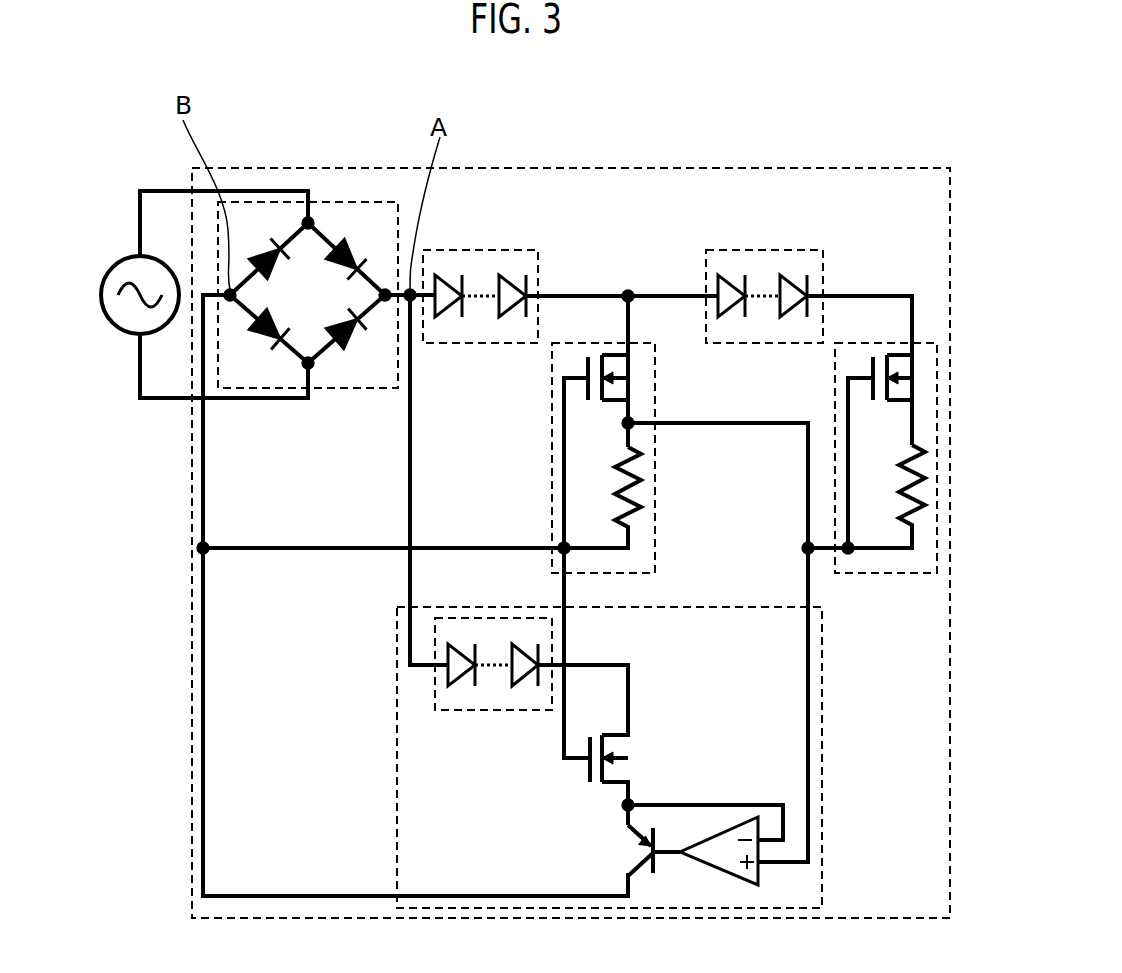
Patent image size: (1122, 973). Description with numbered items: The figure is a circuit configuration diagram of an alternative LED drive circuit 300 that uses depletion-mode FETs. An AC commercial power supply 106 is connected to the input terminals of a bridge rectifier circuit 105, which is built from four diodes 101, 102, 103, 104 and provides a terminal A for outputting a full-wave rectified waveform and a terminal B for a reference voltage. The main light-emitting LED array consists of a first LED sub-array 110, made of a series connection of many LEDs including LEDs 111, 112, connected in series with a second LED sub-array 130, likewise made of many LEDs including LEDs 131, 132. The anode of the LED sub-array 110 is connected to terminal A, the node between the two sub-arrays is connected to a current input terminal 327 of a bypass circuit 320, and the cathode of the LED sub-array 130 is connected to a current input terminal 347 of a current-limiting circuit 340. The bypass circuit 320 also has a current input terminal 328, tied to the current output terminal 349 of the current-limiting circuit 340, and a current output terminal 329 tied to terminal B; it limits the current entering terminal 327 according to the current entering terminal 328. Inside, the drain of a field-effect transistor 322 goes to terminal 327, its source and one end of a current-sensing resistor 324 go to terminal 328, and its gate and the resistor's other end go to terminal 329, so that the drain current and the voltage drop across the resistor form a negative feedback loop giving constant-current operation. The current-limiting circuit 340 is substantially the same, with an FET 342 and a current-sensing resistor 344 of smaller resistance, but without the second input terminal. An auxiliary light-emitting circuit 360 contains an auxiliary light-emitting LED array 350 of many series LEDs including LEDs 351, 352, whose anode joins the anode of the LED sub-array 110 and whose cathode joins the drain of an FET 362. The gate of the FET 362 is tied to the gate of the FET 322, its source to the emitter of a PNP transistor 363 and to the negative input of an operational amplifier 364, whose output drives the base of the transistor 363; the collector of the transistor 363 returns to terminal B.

The diode 101 is at (260, 252).
The diode 102 is at (348, 252).
The diode 103 is at (265, 345).
The diode 104 is at (355, 345).
The bridge rectifier circuit 105 is at (316, 272).
The AC commercial power supply 106 is at (133, 258).
The LED sub-array 110 is at (507, 204).
The LED 111 is at (442, 280).
The LED 112 is at (503, 280).
The LED sub-array 130 is at (792, 205).
The LED 131 is at (727, 280).
The LED 132 is at (787, 280).
The LED drive circuit 300 is at (925, 168).
The bypass circuit 320 is at (631, 602).
The field-effect transistor 322 is at (615, 368).
The current-sensing resistor 324 is at (642, 482).
The current input terminal 327 is at (627, 345).
The current input terminal 328 is at (645, 425).
The current output terminal 329 is at (560, 546).
The current-limiting circuit 340 is at (845, 435).
The FET 342 is at (925, 355).
The current-sensing resistor 344 is at (912, 535).
The current input terminal 347 is at (912, 350).
The current output terminal 349 is at (830, 553).
The auxiliary light-emitting LED array 350 is at (482, 718).
The LED 351 is at (452, 682).
The LED 352 is at (515, 688).
The auxiliary light-emitting circuit 360 is at (656, 757).
The FET 362 is at (622, 745).
The PNP transistor 363 is at (632, 838).
The operational amplifier 364 is at (692, 862).